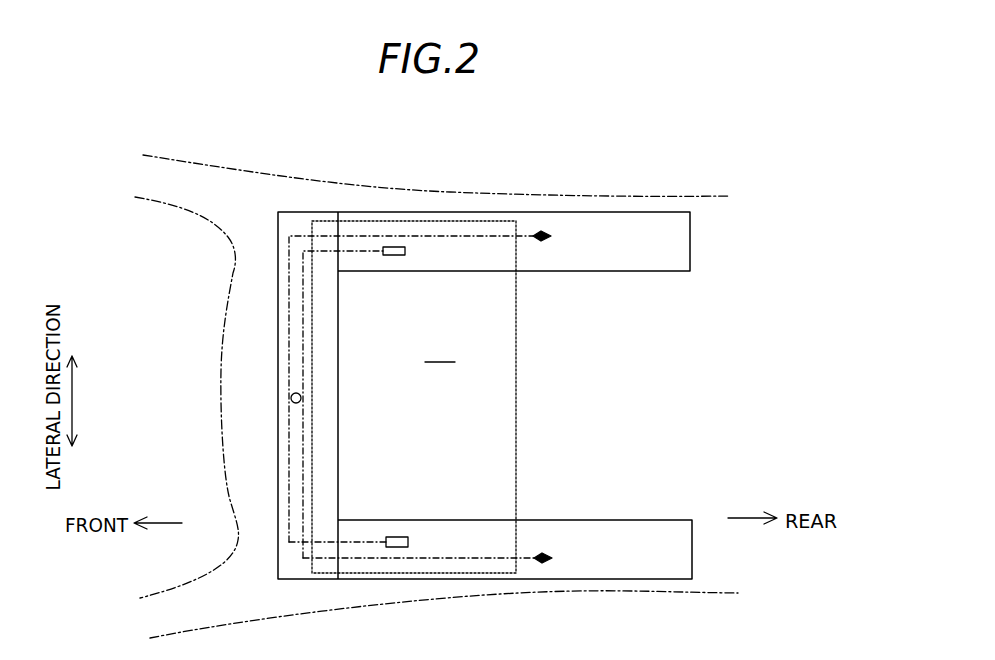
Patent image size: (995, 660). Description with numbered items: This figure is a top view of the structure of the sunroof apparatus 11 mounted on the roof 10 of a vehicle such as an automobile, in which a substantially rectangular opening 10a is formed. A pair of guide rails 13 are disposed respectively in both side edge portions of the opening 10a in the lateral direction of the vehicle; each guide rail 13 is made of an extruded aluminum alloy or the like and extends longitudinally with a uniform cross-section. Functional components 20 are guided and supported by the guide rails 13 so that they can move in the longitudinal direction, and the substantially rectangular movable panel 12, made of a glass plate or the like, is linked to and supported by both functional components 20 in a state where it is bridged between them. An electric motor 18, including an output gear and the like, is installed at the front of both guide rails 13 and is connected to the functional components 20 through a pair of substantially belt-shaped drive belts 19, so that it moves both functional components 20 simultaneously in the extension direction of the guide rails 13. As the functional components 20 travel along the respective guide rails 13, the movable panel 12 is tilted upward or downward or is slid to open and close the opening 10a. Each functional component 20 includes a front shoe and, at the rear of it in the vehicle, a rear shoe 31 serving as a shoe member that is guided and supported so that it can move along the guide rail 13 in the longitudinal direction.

The roof 10 is at (509, 598).
The opening 10a is at (440, 351).
The sunroof apparatus 11 is at (630, 193).
The movable panel 12 is at (517, 396).
The guide rail 13 is at (470, 211).
The electric motor 18 is at (291, 401).
The drive belt 19 is at (288, 467).
The functional component 20 is at (412, 397).
The rear shoe 31 is at (394, 256).